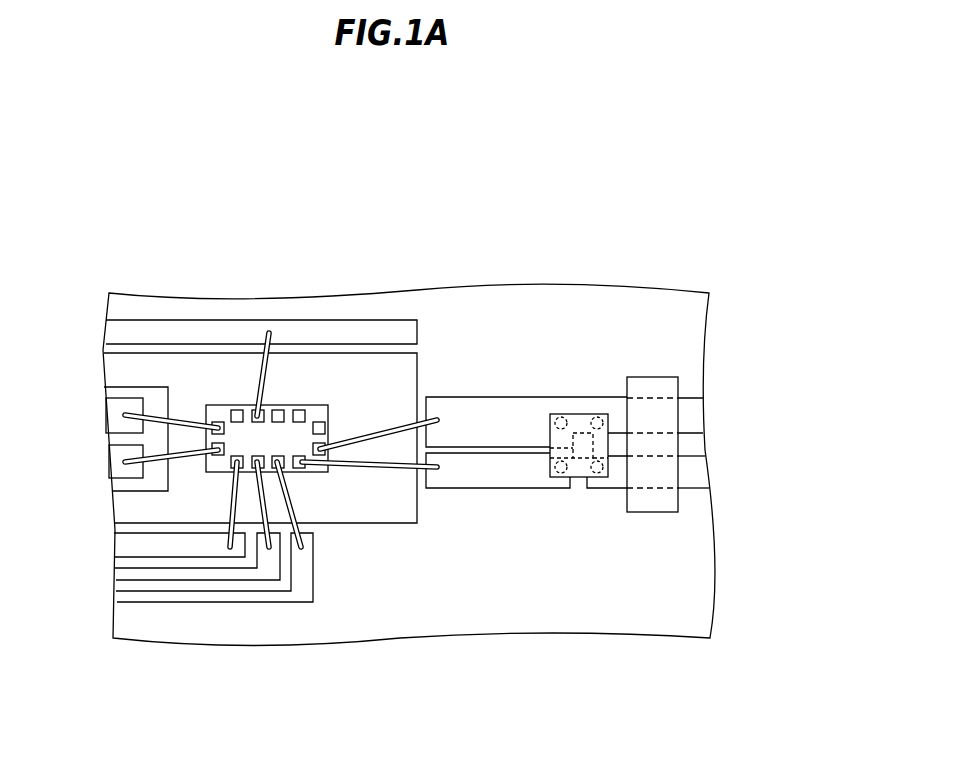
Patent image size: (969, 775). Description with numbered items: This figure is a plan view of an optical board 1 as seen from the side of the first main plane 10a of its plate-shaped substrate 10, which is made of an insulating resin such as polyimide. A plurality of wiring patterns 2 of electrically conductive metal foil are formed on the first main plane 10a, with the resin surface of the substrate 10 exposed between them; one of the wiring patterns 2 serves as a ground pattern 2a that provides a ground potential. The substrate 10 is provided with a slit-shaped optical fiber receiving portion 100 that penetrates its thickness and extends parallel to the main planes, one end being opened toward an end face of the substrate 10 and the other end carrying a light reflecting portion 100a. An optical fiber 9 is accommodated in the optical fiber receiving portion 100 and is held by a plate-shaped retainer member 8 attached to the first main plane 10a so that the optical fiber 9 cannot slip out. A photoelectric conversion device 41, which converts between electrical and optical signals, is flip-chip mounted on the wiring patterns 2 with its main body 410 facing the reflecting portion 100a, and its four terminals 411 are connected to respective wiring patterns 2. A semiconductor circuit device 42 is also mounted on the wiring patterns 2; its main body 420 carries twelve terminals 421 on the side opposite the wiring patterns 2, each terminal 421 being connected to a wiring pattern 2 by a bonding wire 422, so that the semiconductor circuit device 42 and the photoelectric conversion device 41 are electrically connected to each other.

The optical board 1 is at (145, 205).
The wiring patterns 2 is at (122, 598).
The ground pattern 2a is at (477, 413).
The retainer member 8 is at (678, 383).
The optical fiber 9 is at (695, 440).
The substrate 10 is at (705, 542).
The first main plane 10a is at (203, 632).
The photoelectric conversion device 41 is at (575, 408).
The semiconductor circuit device 42 is at (203, 397).
The optical fiber receiving portion 100 is at (690, 432).
The light reflecting portion 100a is at (582, 448).
The main body 410 is at (585, 413).
The terminals 411 is at (597, 420).
The main body 420 is at (308, 398).
The terminals 421 is at (255, 413).
The bonding wire 422 is at (400, 424).